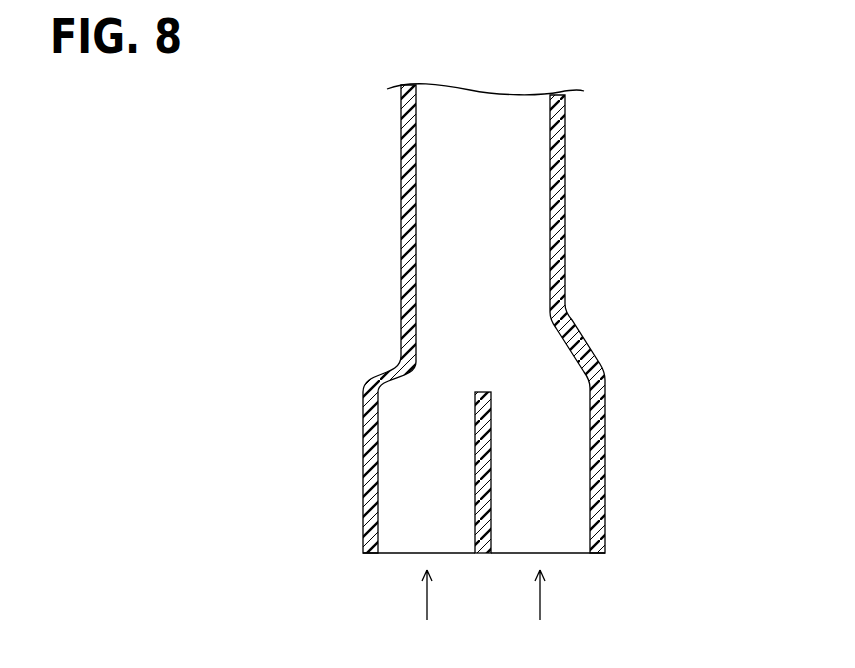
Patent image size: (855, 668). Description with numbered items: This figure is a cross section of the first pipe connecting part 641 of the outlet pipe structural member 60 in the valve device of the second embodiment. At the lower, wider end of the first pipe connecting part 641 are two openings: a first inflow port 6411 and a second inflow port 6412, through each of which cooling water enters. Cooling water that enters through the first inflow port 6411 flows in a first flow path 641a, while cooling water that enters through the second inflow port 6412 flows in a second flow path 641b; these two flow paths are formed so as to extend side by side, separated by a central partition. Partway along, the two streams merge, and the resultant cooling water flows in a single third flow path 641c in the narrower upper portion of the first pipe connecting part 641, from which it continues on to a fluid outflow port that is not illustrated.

The outlet pipe structural member 60 is at (482, 368).
The first pipe connecting part 641 is at (482, 368).
The first flow path 641a is at (540, 436).
The second flow path 641b is at (427, 436).
The third flow path 641c is at (483, 152).
The first inflow port 6411 is at (590, 540).
The second inflow port 6412 is at (378, 540).